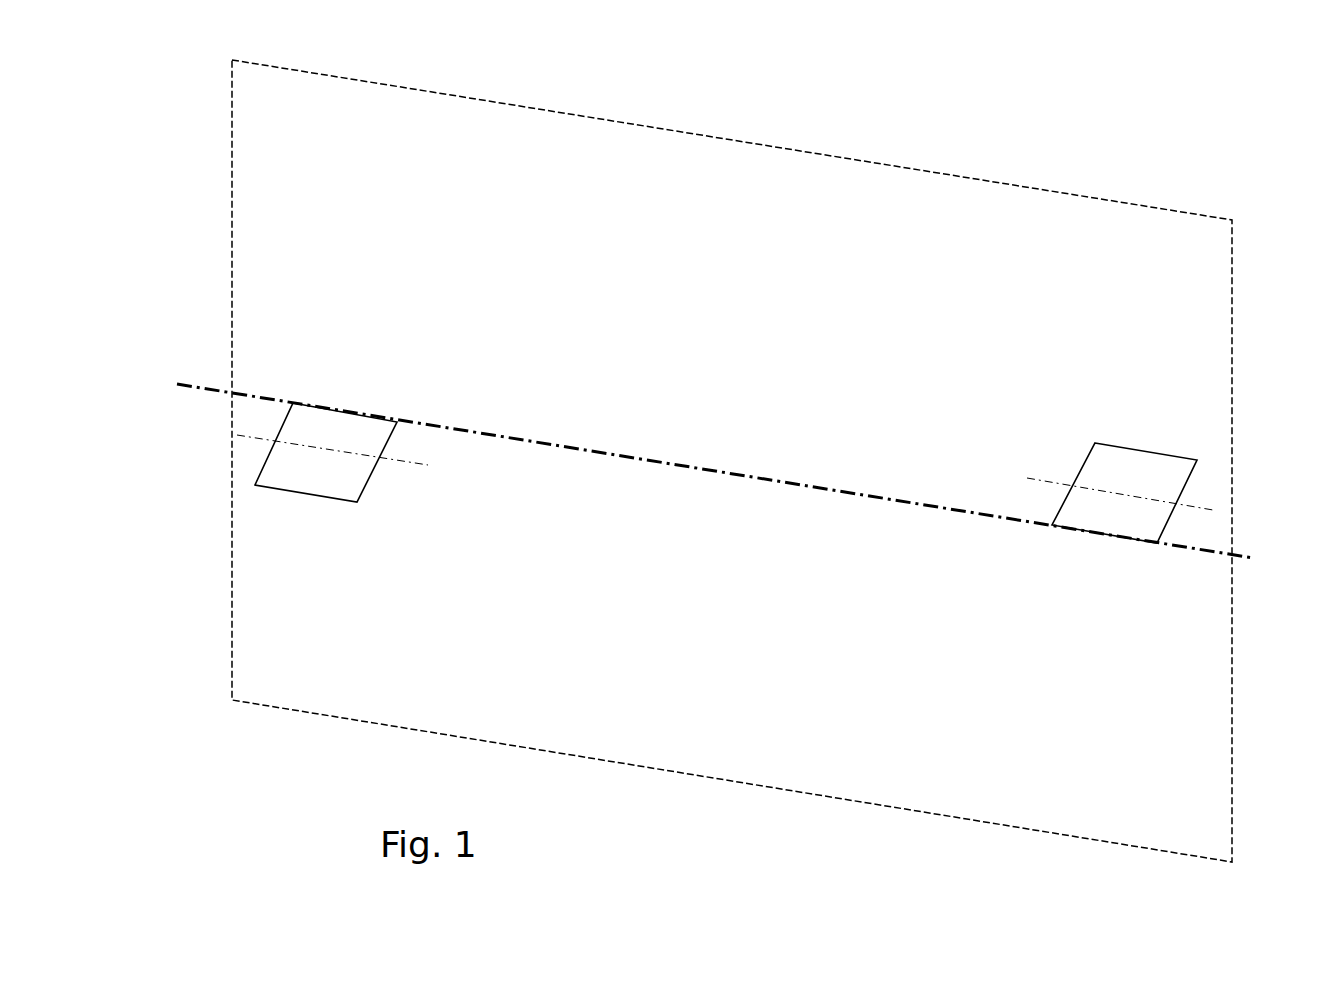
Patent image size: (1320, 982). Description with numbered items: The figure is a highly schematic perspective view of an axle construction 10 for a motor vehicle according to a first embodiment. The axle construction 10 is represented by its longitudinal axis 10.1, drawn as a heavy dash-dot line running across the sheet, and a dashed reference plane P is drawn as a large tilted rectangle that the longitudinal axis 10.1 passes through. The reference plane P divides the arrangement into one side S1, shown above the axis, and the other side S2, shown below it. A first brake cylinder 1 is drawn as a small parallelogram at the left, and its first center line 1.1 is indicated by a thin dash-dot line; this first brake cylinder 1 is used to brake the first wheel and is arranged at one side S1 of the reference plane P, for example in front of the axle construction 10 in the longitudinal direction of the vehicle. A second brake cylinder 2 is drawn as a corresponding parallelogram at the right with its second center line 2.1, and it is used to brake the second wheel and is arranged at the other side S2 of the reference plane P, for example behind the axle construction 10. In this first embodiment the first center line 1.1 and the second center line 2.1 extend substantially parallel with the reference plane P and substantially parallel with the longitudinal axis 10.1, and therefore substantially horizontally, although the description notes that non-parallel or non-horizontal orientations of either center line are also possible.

The axle construction 10 is at (204, 322).
The longitudinal axis 10.1 is at (178, 384).
The reference plane P is at (687, 131).
The one side of the reference plane S1 is at (744, 422).
The other side of the reference plane S2 is at (654, 536).
The first brake cylinder 1 is at (1162, 467).
The first center line 1.1 is at (1198, 505).
The second brake cylinder 2 is at (290, 482).
The second center line 2.1 is at (247, 437).